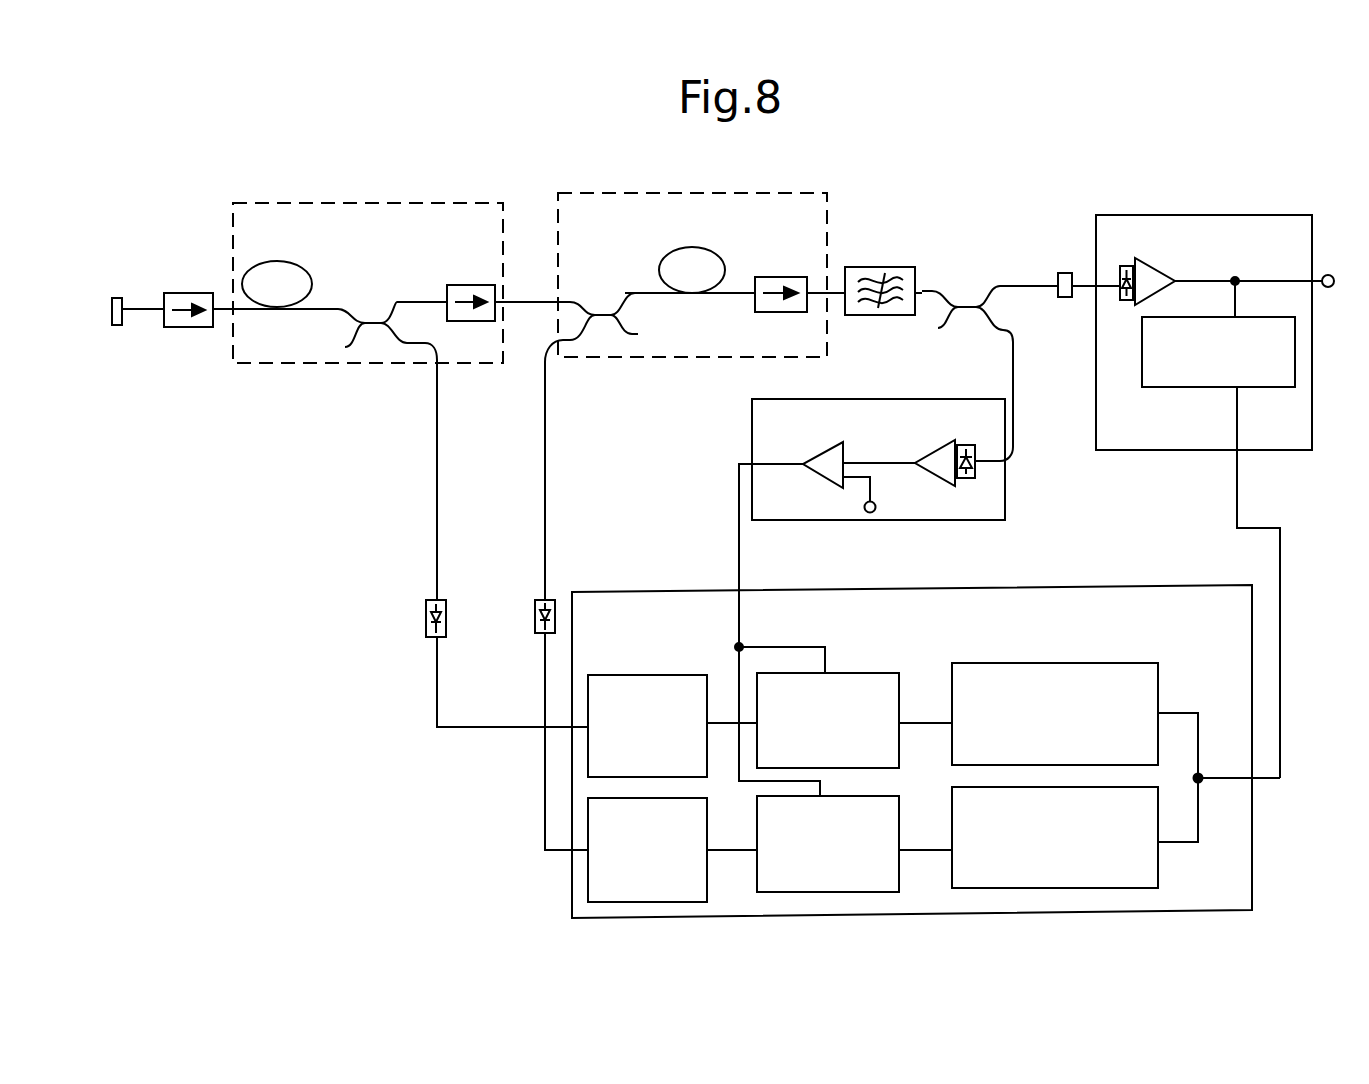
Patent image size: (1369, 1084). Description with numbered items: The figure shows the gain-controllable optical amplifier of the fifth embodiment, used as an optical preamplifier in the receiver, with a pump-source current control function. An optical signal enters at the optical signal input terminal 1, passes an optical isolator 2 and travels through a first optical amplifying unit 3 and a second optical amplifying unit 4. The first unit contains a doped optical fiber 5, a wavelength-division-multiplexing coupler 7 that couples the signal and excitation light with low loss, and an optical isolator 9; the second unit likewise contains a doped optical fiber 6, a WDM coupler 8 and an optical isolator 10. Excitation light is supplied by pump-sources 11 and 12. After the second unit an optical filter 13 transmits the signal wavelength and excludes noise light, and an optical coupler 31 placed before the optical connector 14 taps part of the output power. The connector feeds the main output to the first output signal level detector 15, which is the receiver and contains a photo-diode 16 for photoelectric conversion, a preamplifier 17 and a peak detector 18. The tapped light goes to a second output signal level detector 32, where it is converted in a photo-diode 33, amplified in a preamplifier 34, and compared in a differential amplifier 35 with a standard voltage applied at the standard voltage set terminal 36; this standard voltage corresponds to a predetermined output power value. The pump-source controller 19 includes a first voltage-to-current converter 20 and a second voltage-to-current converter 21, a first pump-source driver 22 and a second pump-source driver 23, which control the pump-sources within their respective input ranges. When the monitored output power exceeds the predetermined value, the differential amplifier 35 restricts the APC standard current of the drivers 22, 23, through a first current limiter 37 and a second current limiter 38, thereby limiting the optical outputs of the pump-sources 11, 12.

The optical signal input terminal 1 is at (125, 297).
The optical isolator 2 is at (196, 293).
The first optical amplifying unit 3 is at (385, 203).
The second optical amplifying unit 4 is at (683, 193).
The optical fiber 5 is at (300, 262).
The optical fiber 6 is at (705, 250).
The wavelength-division-multiplexing coupler 7 is at (368, 314).
The wavelength-division-multiplexing coupler 8 is at (597, 303).
The optical isolator 9 is at (457, 285).
The optical isolator 10 is at (775, 277).
The pump-source 11 is at (447, 608).
The pump-source 12 is at (557, 605).
The optical filter 13 is at (880, 267).
The optical connector 14 is at (1062, 297).
The first output signal level detector 15 is at (1175, 215).
The photo-diode 16 is at (1122, 266).
The preamplifier 17 is at (1163, 270).
The peak detector 18 is at (1195, 387).
The pump-source controller 19 is at (1112, 589).
The first voltage-to-current converter 20 is at (1160, 670).
The second voltage-to-current converter 21 is at (950, 793).
The first pump-source driver 22 is at (617, 675).
The second pump-source driver 23 is at (710, 857).
The optical coupler 31 is at (958, 293).
The second output signal level detector 32 is at (850, 399).
The photo-diode 33 is at (965, 445).
The preamplifier 34 is at (920, 440).
The differential amplifier 35 is at (812, 440).
The standard voltage set terminal 36 is at (878, 507).
The first current limiter 37 is at (903, 707).
The second current limiter 38 is at (903, 858).